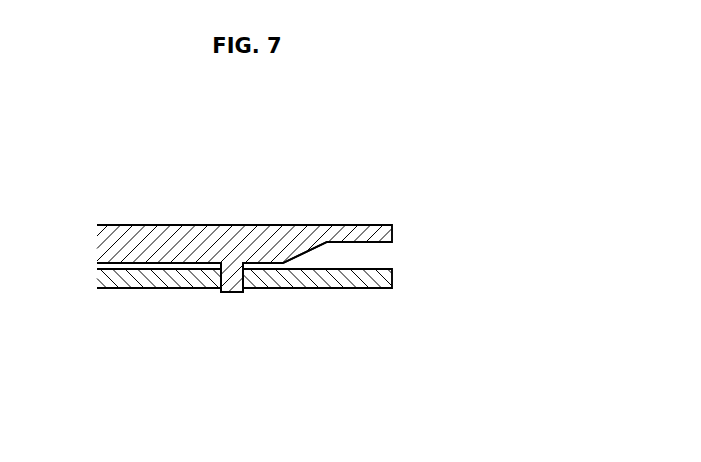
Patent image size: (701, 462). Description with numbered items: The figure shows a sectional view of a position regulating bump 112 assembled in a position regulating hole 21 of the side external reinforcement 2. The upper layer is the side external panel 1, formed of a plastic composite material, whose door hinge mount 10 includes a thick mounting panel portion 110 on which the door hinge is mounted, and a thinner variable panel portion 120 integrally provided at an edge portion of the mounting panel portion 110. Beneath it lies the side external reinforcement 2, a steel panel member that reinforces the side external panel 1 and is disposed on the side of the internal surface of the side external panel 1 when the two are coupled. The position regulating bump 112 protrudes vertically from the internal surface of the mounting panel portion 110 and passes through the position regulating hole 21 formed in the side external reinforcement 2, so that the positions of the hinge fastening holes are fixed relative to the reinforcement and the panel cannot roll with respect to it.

The side external panel 1 is at (363, 225).
The side external reinforcement 2 is at (342, 288).
The door hinge mount 10 is at (208, 121).
The mounting panel portion 110 is at (161, 242).
The variable panel portion 120 is at (307, 248).
The position regulating bump 112 is at (229, 293).
The position regulating hole 21 is at (233, 293).